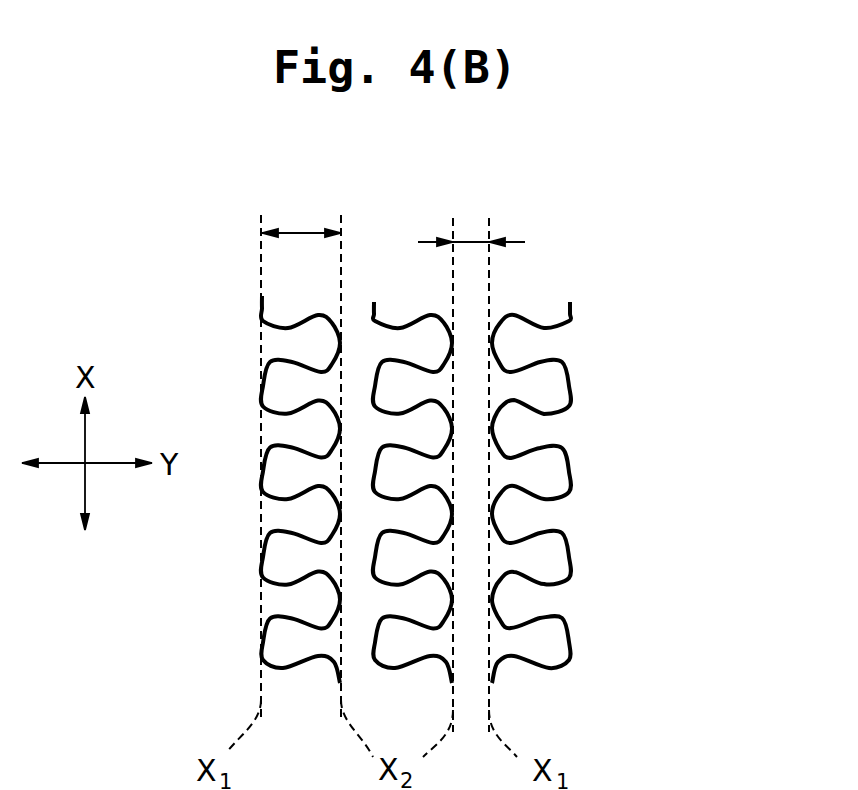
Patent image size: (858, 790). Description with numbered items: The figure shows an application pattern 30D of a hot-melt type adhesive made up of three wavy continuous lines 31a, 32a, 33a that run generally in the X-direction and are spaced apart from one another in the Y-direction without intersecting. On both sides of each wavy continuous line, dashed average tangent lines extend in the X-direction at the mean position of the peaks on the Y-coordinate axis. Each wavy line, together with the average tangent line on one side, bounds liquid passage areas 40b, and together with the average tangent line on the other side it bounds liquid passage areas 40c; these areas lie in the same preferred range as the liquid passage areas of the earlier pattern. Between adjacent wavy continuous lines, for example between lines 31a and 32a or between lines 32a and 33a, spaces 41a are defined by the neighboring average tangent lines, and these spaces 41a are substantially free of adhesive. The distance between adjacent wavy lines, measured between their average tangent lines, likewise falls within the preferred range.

The application pattern 30D is at (692, 275).
The wavy continuous line 31a is at (293, 325).
The wavy continuous line 32a is at (408, 322).
The wavy continuous line 33a is at (528, 318).
The liquid passage area 40b is at (282, 513).
The liquid passage area 40c is at (279, 560).
The space 41a is at (473, 520).